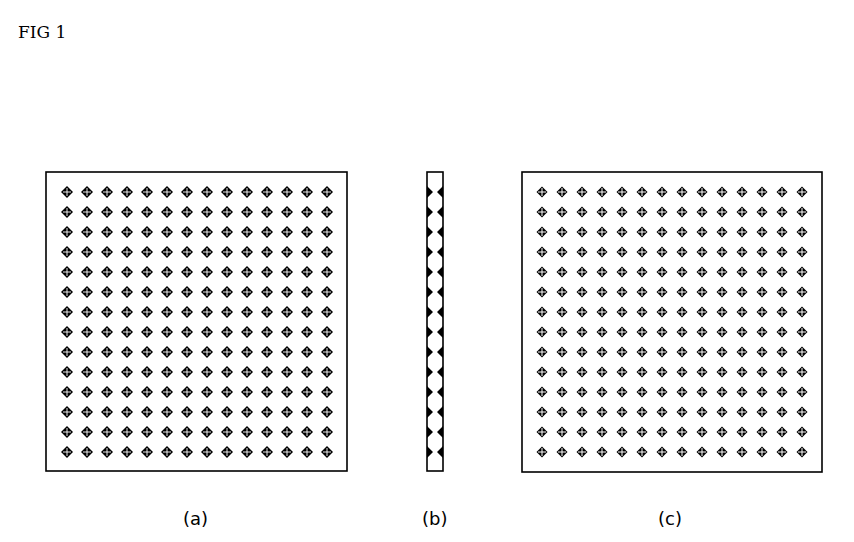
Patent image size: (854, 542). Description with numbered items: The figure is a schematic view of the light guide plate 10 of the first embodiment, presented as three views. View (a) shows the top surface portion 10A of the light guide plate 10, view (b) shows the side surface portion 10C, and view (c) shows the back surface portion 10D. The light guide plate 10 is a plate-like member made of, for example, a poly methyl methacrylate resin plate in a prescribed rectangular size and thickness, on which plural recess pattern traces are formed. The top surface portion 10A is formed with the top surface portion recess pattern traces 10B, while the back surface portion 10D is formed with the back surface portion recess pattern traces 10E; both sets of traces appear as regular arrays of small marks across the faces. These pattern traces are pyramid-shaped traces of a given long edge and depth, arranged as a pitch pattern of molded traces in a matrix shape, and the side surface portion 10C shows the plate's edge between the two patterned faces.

The light guide plate 10 is at (114, 136).
The top surface portion 10A is at (197, 182).
The top surface portion recess pattern traces 10B is at (255, 188).
The side surface portion 10C is at (435, 183).
The back surface portion 10D is at (672, 182).
The back surface portion recess pattern traces 10E is at (723, 193).